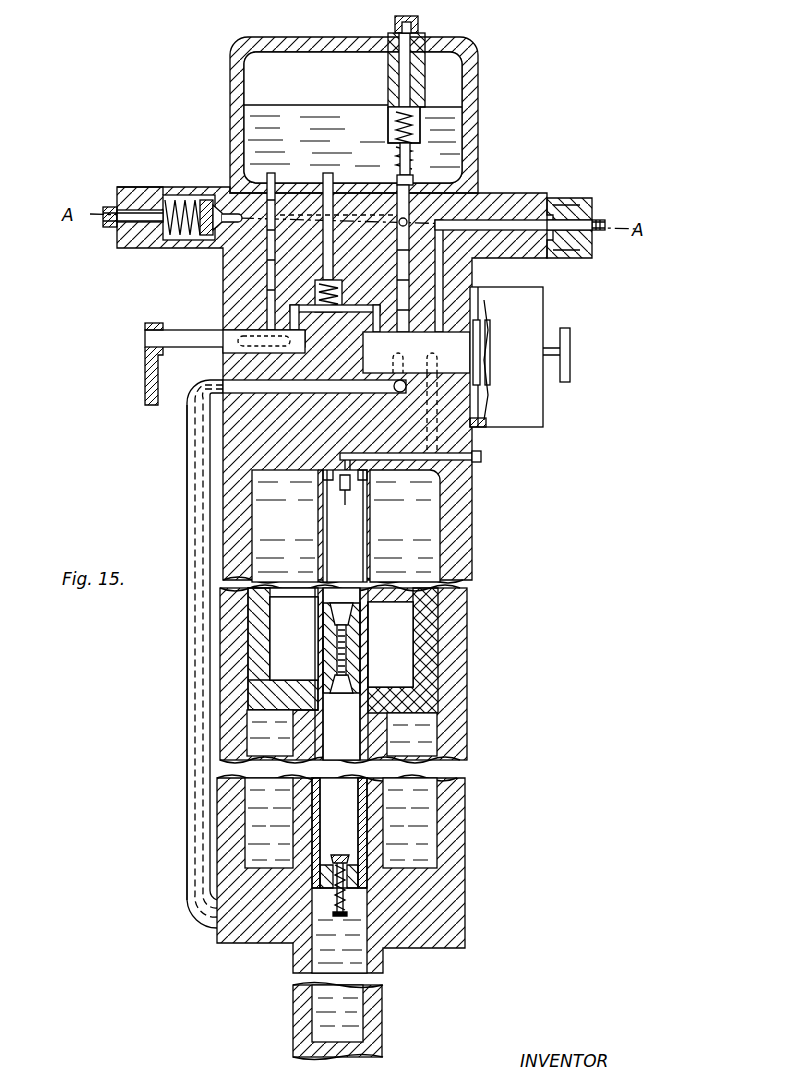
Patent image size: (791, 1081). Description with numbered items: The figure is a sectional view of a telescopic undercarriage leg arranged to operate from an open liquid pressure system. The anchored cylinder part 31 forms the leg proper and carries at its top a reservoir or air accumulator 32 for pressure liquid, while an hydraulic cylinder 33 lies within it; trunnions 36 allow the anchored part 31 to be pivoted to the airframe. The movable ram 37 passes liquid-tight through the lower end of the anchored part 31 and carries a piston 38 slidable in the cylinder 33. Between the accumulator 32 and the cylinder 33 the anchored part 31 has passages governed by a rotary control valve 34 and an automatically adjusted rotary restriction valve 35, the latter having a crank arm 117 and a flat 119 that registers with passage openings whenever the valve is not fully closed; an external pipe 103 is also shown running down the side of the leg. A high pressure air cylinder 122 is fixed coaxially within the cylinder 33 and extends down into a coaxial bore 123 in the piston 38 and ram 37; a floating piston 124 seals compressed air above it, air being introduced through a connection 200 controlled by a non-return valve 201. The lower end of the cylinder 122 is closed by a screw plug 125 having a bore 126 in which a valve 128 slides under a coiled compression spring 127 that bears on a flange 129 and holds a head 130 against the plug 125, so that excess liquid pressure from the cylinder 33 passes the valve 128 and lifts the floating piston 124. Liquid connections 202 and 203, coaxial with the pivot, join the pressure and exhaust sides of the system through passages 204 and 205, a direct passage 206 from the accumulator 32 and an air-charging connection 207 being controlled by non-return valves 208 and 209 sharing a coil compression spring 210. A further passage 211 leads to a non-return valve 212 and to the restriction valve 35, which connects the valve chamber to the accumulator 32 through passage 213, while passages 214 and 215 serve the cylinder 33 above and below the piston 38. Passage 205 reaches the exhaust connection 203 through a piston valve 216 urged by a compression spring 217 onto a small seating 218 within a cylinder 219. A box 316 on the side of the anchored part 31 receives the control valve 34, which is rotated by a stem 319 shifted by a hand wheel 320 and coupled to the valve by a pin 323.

The anchored cylinder part 31 is at (474, 607).
The reservoir or air accumulator 32 is at (448, 76).
The hydraulic cylinder 33 is at (470, 562).
The rotary control valve 34 is at (515, 415).
The rotary restriction valve 35 is at (228, 335).
The trunnions 36 is at (170, 242).
The ram 37 is at (378, 1010).
The piston 38 is at (458, 660).
The return pipe 103 is at (245, 862).
The crank arm 117 is at (145, 392).
The flat 119 is at (240, 346).
The high pressure air cylinder 122 is at (318, 540).
The coaxial bore 123 is at (296, 972).
The floating piston 124 is at (335, 640).
The screw plug 125 is at (350, 897).
The bore 126 is at (360, 878).
The coiled compression spring 127 is at (330, 900).
The valve 128 is at (346, 913).
The flange 129 is at (358, 905).
The head 130 is at (345, 860).
The connection 200 is at (480, 462).
The non-return valve 201 is at (462, 547).
The liquid connection 202 is at (598, 212).
The liquid connection 203 is at (125, 228).
The liquid passage 204 is at (445, 250).
The liquid passage 205 is at (316, 180).
The direct passage 206 is at (415, 186).
The connection 207 is at (426, 40).
The non-return valve 208 is at (418, 167).
The non-return valve 209 is at (422, 118).
The coil compression spring 210 is at (420, 133).
The passage 211 is at (296, 320).
The non-return valve 212 is at (399, 228).
The passage 213 is at (280, 222).
The passage 214 is at (427, 418).
The passage 215 is at (340, 395).
The piston valve 216 is at (188, 196).
The compression spring 217 is at (160, 190).
The seating 218 is at (214, 233).
The cylinder 219 is at (205, 198).
The box 316 is at (510, 437).
The stem 319 is at (562, 352).
The hand wheel 320 is at (570, 368).
The pin 323 is at (490, 318).